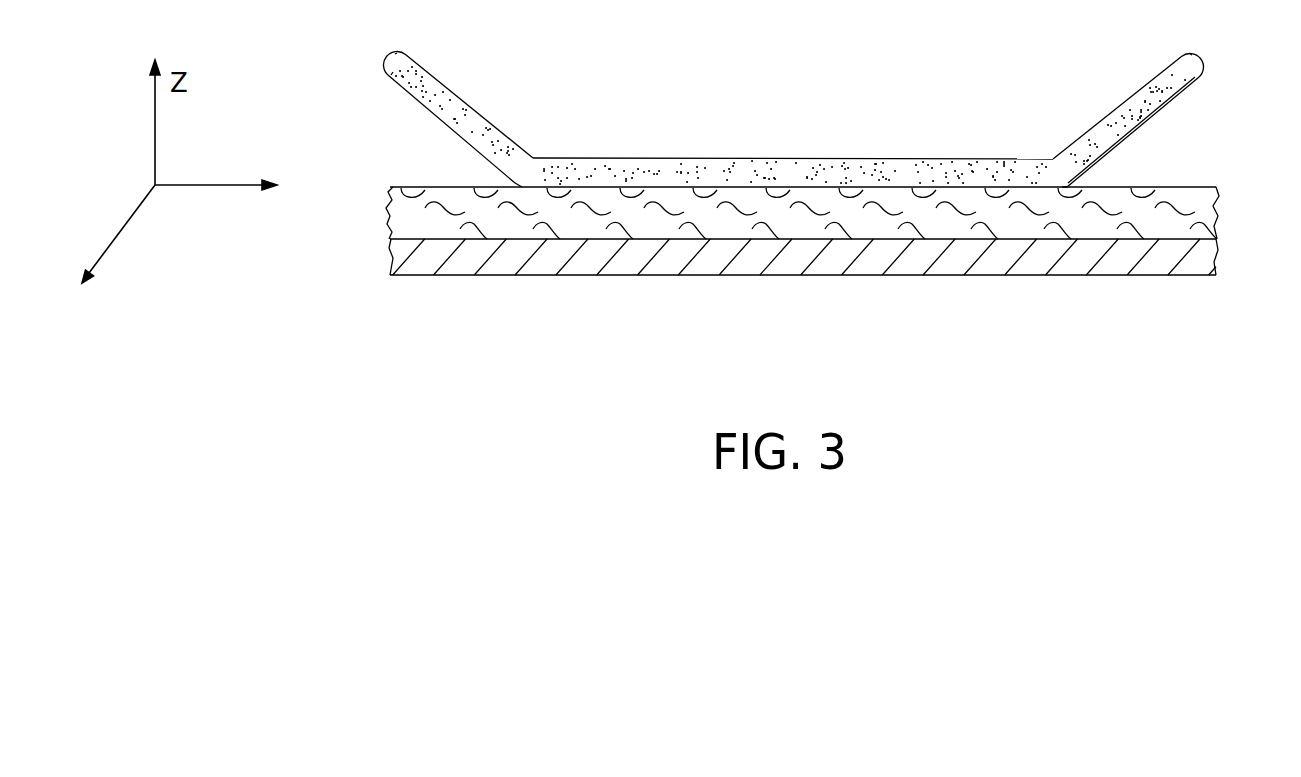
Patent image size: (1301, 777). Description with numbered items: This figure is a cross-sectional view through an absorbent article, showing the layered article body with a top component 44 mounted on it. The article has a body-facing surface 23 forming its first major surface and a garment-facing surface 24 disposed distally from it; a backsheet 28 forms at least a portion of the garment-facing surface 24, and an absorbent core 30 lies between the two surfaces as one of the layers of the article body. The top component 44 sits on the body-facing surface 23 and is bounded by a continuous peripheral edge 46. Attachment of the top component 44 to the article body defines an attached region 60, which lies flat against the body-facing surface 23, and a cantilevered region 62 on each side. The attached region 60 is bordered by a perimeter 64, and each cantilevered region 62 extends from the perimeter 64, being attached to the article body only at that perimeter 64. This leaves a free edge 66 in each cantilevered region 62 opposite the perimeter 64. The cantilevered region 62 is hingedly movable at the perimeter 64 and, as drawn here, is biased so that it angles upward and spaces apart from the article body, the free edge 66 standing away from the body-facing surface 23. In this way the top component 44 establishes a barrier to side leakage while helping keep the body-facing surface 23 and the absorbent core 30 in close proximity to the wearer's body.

The body-facing surface 23 is at (1160, 188).
The garment-facing surface 24 is at (1155, 275).
The backsheet 28 is at (387, 247).
The absorbent core 30 is at (1017, 223).
The top component 44 is at (650, 170).
The continuous peripheral edge 46 is at (387, 55).
The attached region 60 is at (912, 158).
The cantilevered region 62 is at (1133, 92).
The perimeter 64 is at (513, 183).
The free edge 66 is at (387, 70).